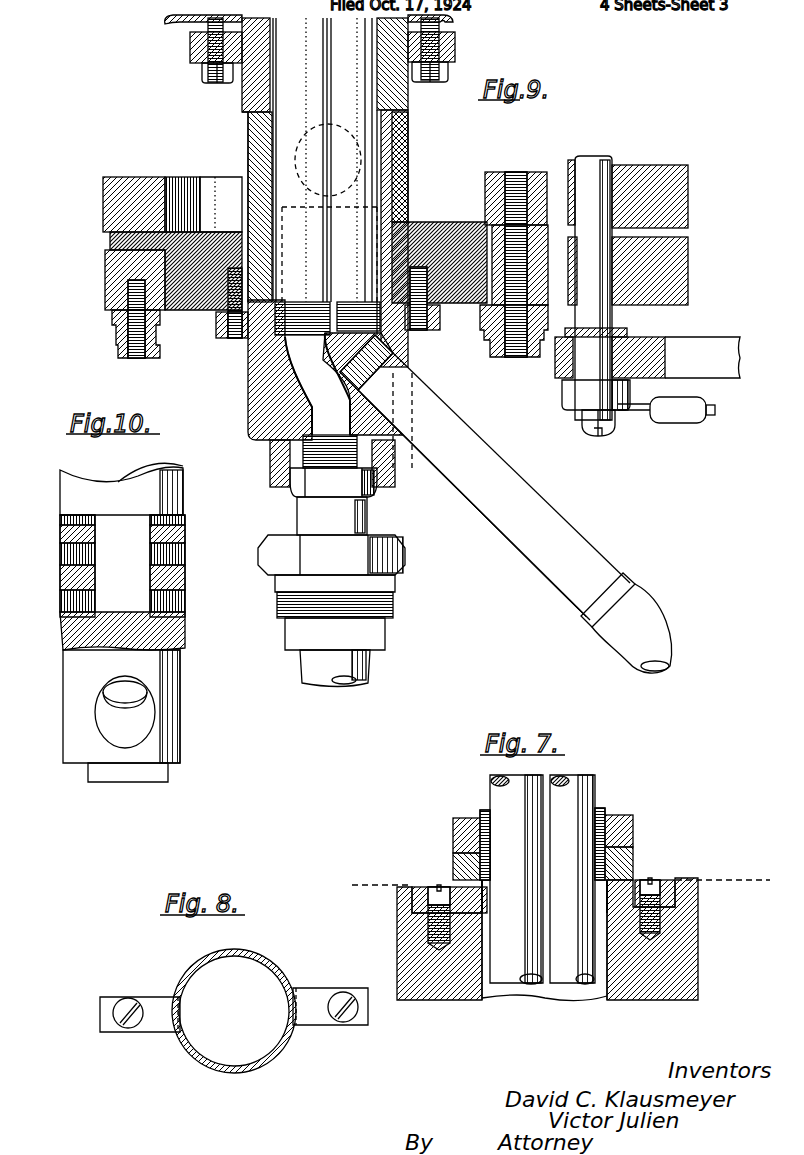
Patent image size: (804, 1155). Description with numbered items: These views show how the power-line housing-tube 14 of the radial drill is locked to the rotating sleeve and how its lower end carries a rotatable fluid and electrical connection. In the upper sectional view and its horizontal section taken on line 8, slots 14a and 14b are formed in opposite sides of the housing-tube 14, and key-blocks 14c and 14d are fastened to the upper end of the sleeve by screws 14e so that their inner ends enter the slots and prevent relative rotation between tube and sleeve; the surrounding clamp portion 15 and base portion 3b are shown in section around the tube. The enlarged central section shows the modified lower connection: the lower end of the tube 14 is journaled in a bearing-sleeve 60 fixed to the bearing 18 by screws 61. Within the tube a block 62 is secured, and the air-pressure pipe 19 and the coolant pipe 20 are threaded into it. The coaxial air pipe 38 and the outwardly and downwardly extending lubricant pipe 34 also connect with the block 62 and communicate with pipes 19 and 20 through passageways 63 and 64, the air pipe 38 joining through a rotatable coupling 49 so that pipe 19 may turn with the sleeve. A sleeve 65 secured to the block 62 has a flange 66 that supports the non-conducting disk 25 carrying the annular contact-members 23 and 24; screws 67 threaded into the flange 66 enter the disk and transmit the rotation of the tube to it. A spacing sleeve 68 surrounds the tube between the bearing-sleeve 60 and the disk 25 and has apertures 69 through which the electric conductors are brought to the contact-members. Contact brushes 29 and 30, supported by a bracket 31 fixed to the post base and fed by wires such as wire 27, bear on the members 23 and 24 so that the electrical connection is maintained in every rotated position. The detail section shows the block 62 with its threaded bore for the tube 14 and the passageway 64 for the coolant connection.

In FIG. 9, the bearing 18 is at (188, 23).
In FIG. 9, the screws 61 is at (203, 72).
In FIG. 9, the bearing-sleeve 60 is at (243, 96).
In FIG. 9, the air-pressure pipe 19 is at (272, 148).
In FIG. 7, the air-pressure pipe 19 is at (502, 797).
In FIG. 9, the lubricant or coolant pipe 20 is at (360, 185).
In FIG. 7, the lubricant or coolant pipe 20 is at (570, 794).
In FIG. 9, the apertures 69 is at (316, 183).
In FIG. 9, the spacing sleeve 68 is at (408, 130).
In FIG. 9, the annular contact-member 24 is at (104, 205).
In FIG. 9, the disk 25 is at (110, 244).
In FIG. 9, the annular contact-member 23 is at (104, 283).
In FIG. 9, the flange 66 is at (220, 328).
In FIG. 9, the screws 67 is at (236, 340).
In FIG. 9, the sleeve 65 is at (250, 372).
In FIG. 9, the passageway 64 is at (367, 345).
In FIG. 10, the passageway 64 is at (112, 690).
In FIG. 9, the passageway 63 is at (318, 393).
In FIG. 9, the block 62 is at (272, 448).
In FIG. 10, the block 62 is at (183, 633).
In FIG. 9, the rotatable coupling 49 is at (283, 548).
In FIG. 9, the air pipe 38 is at (368, 511).
In FIG. 9, the pipe 34 is at (498, 483).
In FIG. 9, the contact brush 29 is at (690, 197).
In FIG. 9, the contact brush 30 is at (690, 272).
In FIG. 9, the bracket 31 is at (707, 346).
In FIG. 9, the wire 27 is at (690, 421).
In FIG. 10, the housing-tube 14 is at (173, 492).
In FIG. 7, the housing-tube 14 is at (497, 992).
In FIG. 8, the housing-tube 14 is at (278, 968).
In FIG. 7, the clamp member 15 is at (455, 836).
In FIG. 7, the slot 14a is at (501, 899).
In FIG. 8, the slot 14a is at (180, 1000).
In FIG. 7, the slot 14b is at (605, 910).
In FIG. 8, the slot 14b is at (292, 995).
In FIG. 7, the key-block 14c is at (428, 893).
In FIG. 8, the key-block 14c is at (155, 996).
In FIG. 7, the key-block 14d is at (665, 884).
In FIG. 8, the key-block 14d is at (322, 995).
In FIG. 7, the screws 14e is at (428, 895).
In FIG. 8, the screws 14e is at (130, 1025).
In FIG. 7, the section line 8 is at (562, 882).
In FIG. 7, the base 3b is at (688, 940).